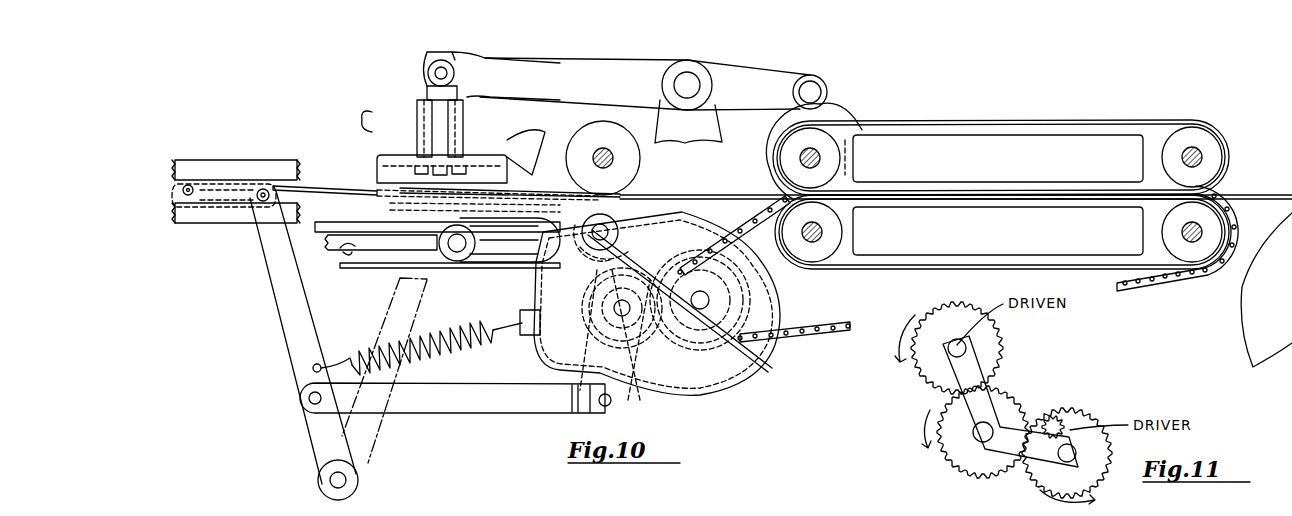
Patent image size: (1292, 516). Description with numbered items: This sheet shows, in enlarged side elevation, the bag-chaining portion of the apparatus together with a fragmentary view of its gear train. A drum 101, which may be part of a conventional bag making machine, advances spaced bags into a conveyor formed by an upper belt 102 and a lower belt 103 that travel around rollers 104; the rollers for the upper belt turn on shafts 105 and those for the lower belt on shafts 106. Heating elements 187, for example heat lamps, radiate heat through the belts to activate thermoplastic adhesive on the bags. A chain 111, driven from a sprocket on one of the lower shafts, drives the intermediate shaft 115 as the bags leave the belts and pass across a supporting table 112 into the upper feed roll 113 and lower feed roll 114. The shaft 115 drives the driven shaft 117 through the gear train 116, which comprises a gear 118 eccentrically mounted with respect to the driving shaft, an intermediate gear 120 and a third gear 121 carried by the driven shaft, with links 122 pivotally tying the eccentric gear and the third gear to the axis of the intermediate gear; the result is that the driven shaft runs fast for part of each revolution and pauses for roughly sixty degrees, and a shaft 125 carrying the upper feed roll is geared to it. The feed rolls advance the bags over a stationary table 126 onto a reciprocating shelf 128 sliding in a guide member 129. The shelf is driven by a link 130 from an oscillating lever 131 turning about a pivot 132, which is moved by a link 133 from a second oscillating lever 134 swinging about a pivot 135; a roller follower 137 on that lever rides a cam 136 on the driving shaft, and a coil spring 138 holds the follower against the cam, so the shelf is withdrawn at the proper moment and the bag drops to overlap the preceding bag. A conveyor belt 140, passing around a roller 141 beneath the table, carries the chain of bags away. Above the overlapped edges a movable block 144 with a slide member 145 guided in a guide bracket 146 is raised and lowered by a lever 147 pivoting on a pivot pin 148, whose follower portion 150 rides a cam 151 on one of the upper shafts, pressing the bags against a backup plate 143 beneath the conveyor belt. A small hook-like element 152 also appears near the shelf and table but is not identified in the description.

In FIG. 10, the drum 101 is at (1245, 298).
In FIG. 10, the upper belt 102 is at (1145, 120).
In FIG. 10, the lower belt 103 is at (1028, 204).
In FIG. 10, the rollers 104 is at (840, 148).
In FIG. 10, the shafts 105 is at (800, 160).
In FIG. 10, the shafts 106 is at (822, 232).
In FIG. 10, the chain 111 is at (810, 340).
In FIG. 10, the supporting table 112 is at (706, 204).
In FIG. 10, the upper feed roll 113 is at (618, 140).
In FIG. 10, the lower feed roll 114 is at (528, 183).
In FIG. 10, the intermediate shaft 115 is at (718, 295).
In FIG. 11, the intermediate shaft 115 is at (1063, 410).
In FIG. 10, the gear train 116 is at (710, 398).
In FIG. 11, the gear train 116 is at (1028, 390).
In FIG. 10, the driven shaft 117 is at (587, 252).
In FIG. 11, the driven shaft 117 is at (968, 350).
In FIG. 11, the gear 118 is at (1075, 415).
In FIG. 10, the intermediate gear 120 is at (590, 312).
In FIG. 11, the intermediate gear 120 is at (960, 455).
In FIG. 11, the third gear 121 is at (925, 372).
In FIG. 11, the links 122 is at (940, 385).
In FIG. 10, the shaft 125 is at (595, 155).
In FIG. 10, the stationary table 126 is at (522, 265).
In FIG. 10, the reciprocating shelf 128 is at (330, 184).
In FIG. 10, the guide member 129 is at (222, 160).
In FIG. 10, the link 130 is at (228, 222).
In FIG. 10, the oscillating lever 131 is at (290, 330).
In FIG. 10, the pivot 132 is at (322, 482).
In FIG. 10, the link 133 is at (432, 414).
In FIG. 10, the second oscillating lever 134 is at (580, 378).
In FIG. 10, the pivot 135 is at (645, 226).
In FIG. 10, the cam 136 is at (655, 385).
In FIG. 10, the roller follower 137 is at (585, 335).
In FIG. 10, the coil spring 138 is at (350, 358).
In FIG. 10, the conveyor belt 140 is at (437, 336).
In FIG. 10, the roller 141 is at (455, 262).
In FIG. 10, the backup plate 143 is at (368, 222).
In FIG. 10, the movable block 144 is at (482, 170).
In FIG. 10, the slide member 145 is at (440, 117).
In FIG. 10, the guide bracket 146 is at (425, 110).
In FIG. 10, the lever 147 is at (555, 65).
In FIG. 10, the pivot pin 148 is at (675, 80).
In FIG. 10, the follower portion 150 is at (822, 80).
In FIG. 10, the cam 151 is at (845, 110).
In FIG. 10, the hook 152 is at (358, 124).
In FIG. 10, the heating elements 187 is at (1052, 140).